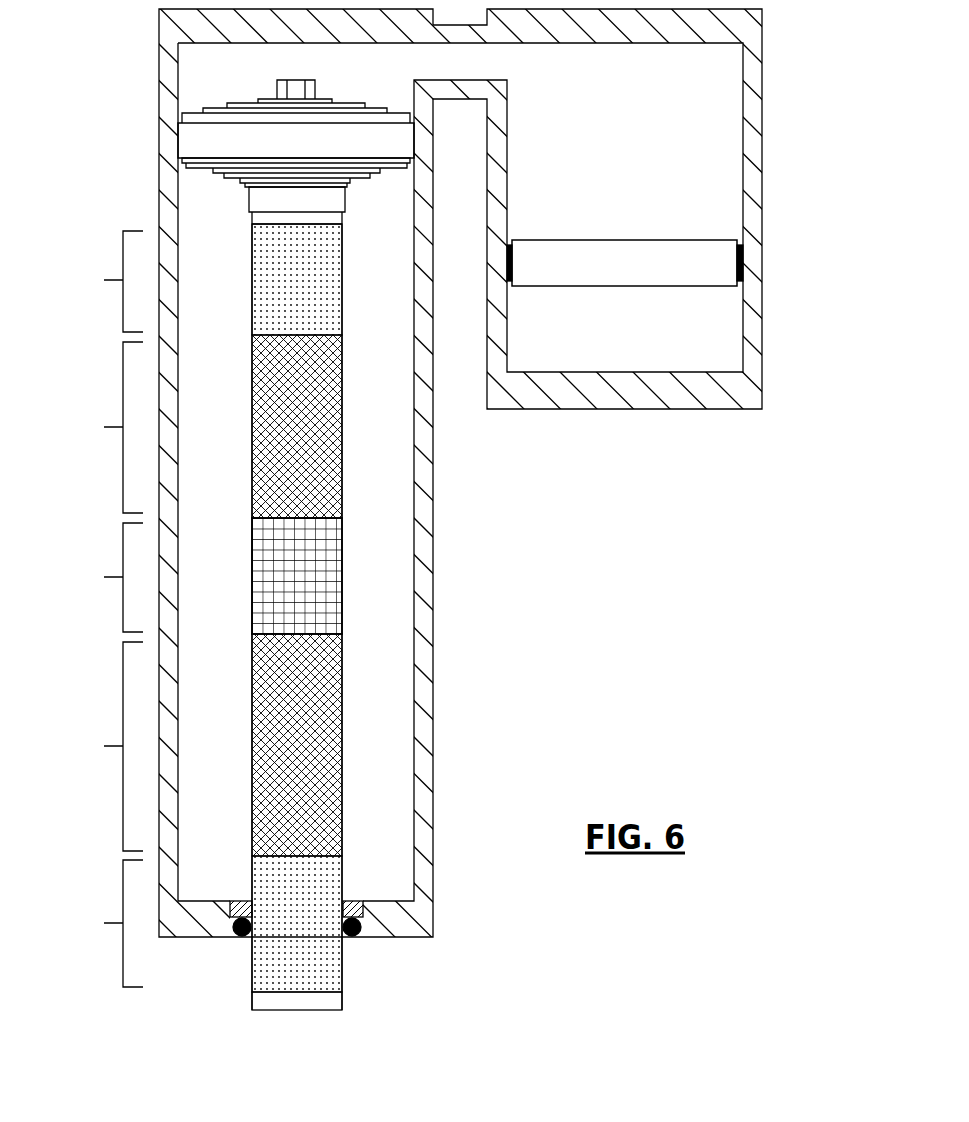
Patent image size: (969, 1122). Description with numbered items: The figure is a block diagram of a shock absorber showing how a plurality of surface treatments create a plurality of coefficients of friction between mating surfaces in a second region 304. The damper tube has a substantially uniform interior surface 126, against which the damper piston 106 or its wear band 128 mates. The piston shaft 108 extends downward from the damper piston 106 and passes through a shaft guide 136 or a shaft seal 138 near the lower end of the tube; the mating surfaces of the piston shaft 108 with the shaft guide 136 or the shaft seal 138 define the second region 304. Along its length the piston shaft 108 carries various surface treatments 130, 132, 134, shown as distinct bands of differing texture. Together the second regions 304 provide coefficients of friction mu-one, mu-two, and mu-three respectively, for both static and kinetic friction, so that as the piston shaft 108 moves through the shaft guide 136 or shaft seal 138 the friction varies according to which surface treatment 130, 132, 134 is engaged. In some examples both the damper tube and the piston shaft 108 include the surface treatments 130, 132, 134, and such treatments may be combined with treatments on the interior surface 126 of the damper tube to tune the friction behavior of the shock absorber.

The damper piston 106 is at (197, 115).
The wear band 128 is at (183, 138).
The interior surface 126 is at (180, 507).
The surface treatment 134 is at (323, 307).
The surface treatment 132 is at (323, 438).
The surface treatment 130 is at (323, 567).
The shaft guide 136 is at (360, 908).
The shaft seal 138 is at (233, 938).
The piston shaft 108 is at (323, 1001).
The second region 304 is at (100, 609).